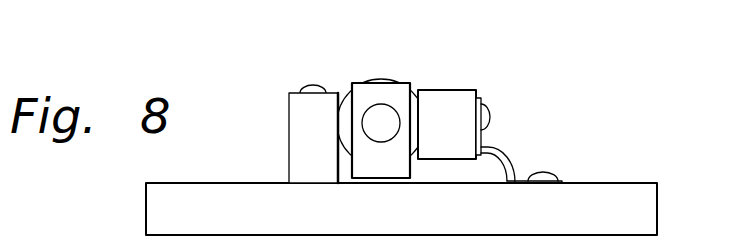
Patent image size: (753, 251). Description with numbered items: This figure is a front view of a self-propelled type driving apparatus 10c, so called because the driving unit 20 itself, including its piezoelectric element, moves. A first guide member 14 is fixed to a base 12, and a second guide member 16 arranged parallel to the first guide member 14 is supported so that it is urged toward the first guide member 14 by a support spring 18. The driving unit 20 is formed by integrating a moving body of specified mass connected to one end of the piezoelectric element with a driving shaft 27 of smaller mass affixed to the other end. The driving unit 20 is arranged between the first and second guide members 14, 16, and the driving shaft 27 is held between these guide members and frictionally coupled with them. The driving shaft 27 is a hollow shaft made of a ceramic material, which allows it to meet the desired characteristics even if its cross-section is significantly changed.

The self-propelled type driving apparatus 10c is at (575, 56).
The base 12 is at (657, 210).
The first guide member 14 is at (289, 135).
The second guide member 16 is at (452, 89).
The support spring 18 is at (502, 153).
The driving unit 20 is at (381, 81).
The driving shaft 27 is at (347, 96).